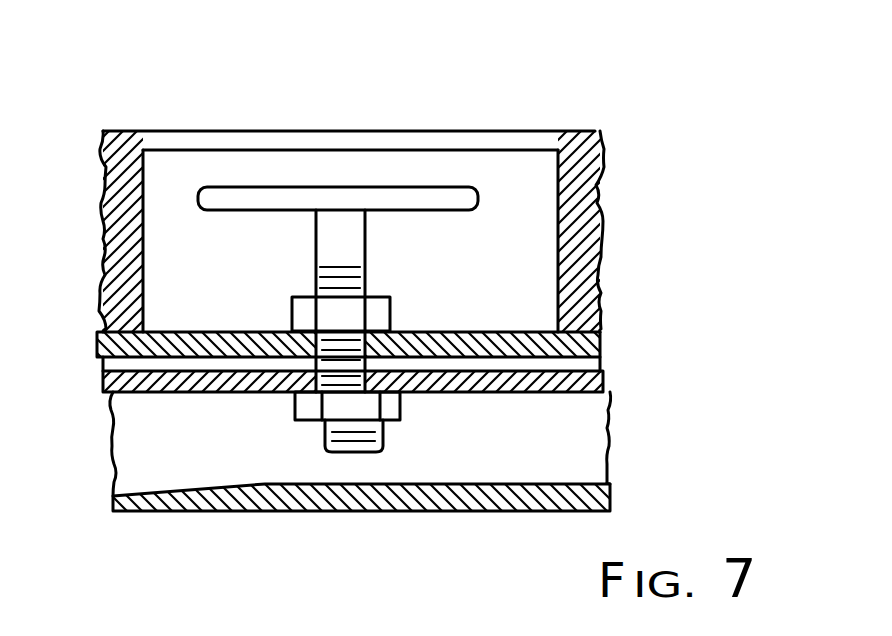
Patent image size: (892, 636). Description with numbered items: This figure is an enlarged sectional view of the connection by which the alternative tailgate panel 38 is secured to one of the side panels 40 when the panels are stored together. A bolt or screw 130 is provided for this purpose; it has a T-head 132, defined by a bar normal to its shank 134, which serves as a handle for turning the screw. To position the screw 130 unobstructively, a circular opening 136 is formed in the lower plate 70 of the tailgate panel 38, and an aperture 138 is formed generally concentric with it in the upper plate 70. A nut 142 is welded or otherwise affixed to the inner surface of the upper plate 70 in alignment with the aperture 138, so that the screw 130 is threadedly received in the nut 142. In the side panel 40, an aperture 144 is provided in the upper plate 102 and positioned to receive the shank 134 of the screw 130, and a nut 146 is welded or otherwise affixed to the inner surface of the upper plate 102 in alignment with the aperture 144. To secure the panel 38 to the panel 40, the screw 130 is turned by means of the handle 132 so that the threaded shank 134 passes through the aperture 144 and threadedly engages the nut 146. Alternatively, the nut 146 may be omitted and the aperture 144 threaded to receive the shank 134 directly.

The tailgate panel 38 is at (602, 203).
The side panel 40 is at (612, 417).
The plate 70 is at (597, 136).
The upper plate 102 is at (608, 364).
The screw 130 is at (365, 242).
The T-head 132 is at (245, 200).
The shank 134 is at (385, 448).
The circular opening 136 is at (556, 135).
The aperture 138 is at (388, 332).
The nut 142 is at (293, 308).
The aperture 144 is at (323, 394).
The nut 146 is at (338, 388).